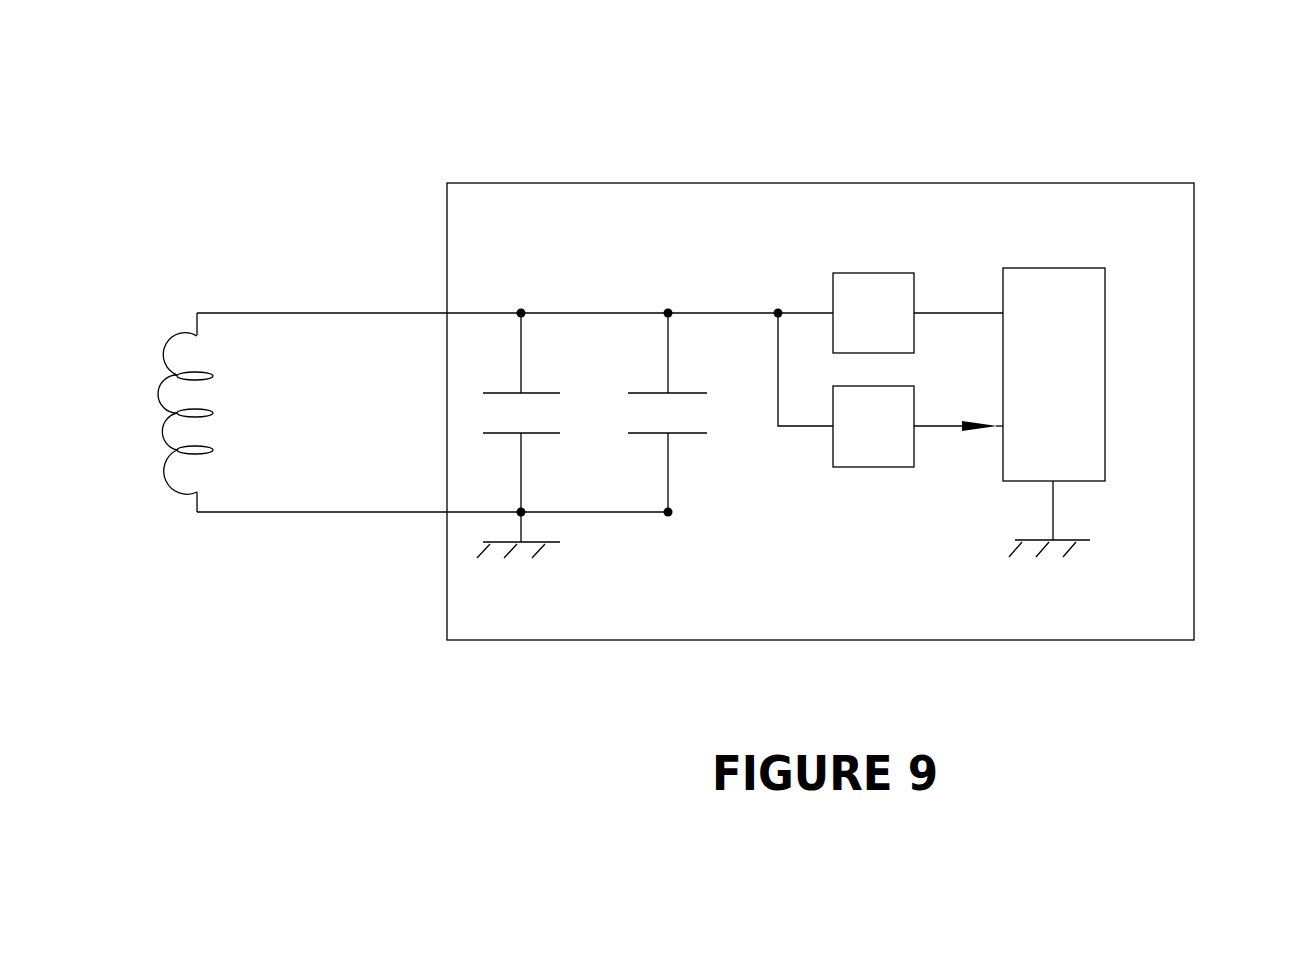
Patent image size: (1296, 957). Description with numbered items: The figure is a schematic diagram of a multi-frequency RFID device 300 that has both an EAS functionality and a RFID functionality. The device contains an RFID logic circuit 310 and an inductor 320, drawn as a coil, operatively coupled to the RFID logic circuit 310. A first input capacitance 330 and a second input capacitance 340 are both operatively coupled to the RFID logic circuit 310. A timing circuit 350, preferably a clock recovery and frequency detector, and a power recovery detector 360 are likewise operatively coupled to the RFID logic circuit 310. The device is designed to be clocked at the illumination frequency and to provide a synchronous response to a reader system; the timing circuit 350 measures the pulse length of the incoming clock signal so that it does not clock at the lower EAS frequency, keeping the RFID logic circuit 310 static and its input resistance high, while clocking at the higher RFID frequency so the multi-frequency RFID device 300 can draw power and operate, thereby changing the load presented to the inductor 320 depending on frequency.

The multi-frequency RFID device 300 is at (863, 134).
The RFID logic circuit 310 is at (1089, 388).
The inductor 320 is at (163, 478).
The first input capacitance (C1) 330 is at (541, 358).
The second input capacitance (C2) 340 is at (684, 358).
The timing circuit 350 is at (877, 452).
The power recovery detector 360 is at (887, 288).